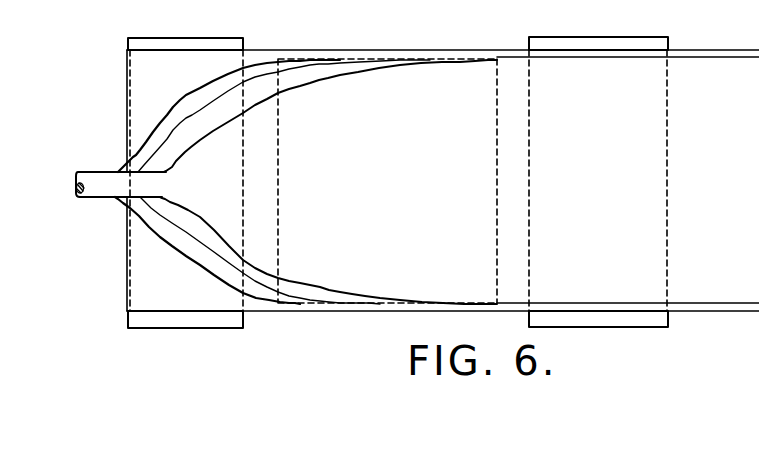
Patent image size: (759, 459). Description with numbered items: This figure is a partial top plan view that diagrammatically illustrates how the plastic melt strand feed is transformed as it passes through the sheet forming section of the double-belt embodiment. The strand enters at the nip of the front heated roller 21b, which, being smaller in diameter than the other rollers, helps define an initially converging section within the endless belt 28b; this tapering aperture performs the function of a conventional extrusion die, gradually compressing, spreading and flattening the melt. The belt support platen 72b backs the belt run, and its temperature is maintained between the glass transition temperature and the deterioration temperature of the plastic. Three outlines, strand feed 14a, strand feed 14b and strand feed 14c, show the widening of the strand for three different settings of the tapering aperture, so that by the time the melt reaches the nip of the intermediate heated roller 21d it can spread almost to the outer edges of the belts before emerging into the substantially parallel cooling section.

The strand feed at first aperture setting 14a is at (170, 112).
The strand feed at second aperture setting 14b is at (193, 117).
The strand feed at third aperture setting 14c is at (204, 139).
The front heated roller 21b is at (175, 38).
The intermediate heated roller 21d is at (590, 37).
The endless belt 28b is at (443, 49).
The belt support platen 72b is at (431, 205).